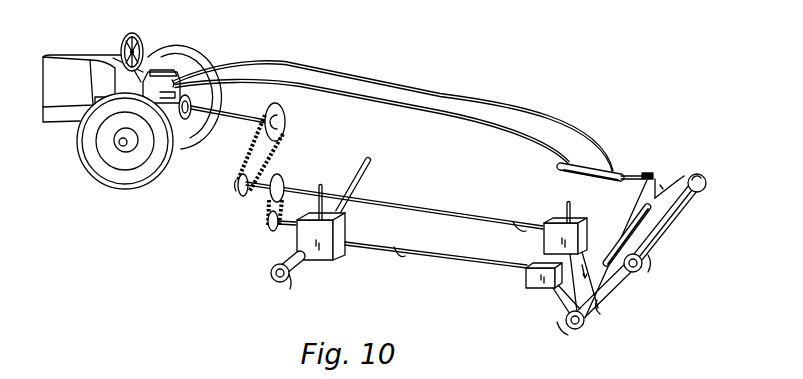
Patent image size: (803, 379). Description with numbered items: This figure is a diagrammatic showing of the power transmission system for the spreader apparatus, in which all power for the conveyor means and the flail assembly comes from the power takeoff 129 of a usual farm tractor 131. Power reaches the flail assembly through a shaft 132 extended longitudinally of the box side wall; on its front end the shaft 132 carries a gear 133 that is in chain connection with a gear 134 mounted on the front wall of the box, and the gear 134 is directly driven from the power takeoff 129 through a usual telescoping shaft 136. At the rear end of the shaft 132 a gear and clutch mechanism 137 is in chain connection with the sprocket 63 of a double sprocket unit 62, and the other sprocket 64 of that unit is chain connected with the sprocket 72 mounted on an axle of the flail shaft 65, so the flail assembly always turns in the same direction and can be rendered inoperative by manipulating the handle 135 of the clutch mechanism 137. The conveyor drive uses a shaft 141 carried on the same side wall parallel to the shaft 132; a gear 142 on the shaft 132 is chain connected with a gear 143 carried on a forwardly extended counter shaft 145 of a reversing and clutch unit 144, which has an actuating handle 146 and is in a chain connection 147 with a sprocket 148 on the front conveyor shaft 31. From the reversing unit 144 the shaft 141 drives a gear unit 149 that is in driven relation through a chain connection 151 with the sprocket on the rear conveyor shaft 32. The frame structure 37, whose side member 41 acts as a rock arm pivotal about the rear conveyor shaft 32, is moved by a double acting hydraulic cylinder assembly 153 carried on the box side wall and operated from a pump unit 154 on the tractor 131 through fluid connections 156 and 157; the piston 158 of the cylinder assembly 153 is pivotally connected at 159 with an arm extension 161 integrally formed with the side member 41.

The power takeoff 129 is at (202, 146).
The farm tractor 131 is at (70, 55).
The pump unit 154 is at (176, 82).
The fluid connection 156 is at (432, 104).
The fluid connection 157 is at (495, 100).
The double acting hydraulic cylinder assembly 153 is at (585, 167).
The piston 158 is at (629, 173).
The pivotal connection 159 is at (647, 172).
The arm extension 161 is at (671, 182).
The frame structure 37 is at (678, 182).
The telescoping shaft 136 is at (240, 113).
The gear 134 is at (286, 123).
The gear 133 is at (243, 196).
The shaft 132 is at (452, 214).
The gear 142 is at (283, 181).
The gear 143 is at (271, 229).
The counter shaft 145 is at (287, 233).
The front conveyor shaft 31 is at (364, 178).
The reversing and clutch unit 144 is at (324, 252).
The actuating handle 146 is at (324, 187).
The chain connection 147 is at (301, 268).
The sprocket 148 is at (278, 283).
The shaft 141 is at (452, 259).
The gear unit 149 is at (537, 287).
The gear and clutch mechanism 137 is at (571, 232).
The handle 135 is at (565, 205).
The chain connection 151 is at (558, 302).
The sprocket 63 is at (584, 326).
The sprocket 64 is at (601, 312).
The double sprocket unit 62 is at (578, 337).
The rear conveyor shaft 32 is at (626, 248).
The flail shaft 65 is at (697, 222).
The side member 41 is at (698, 176).
The sprocket 72 is at (644, 270).